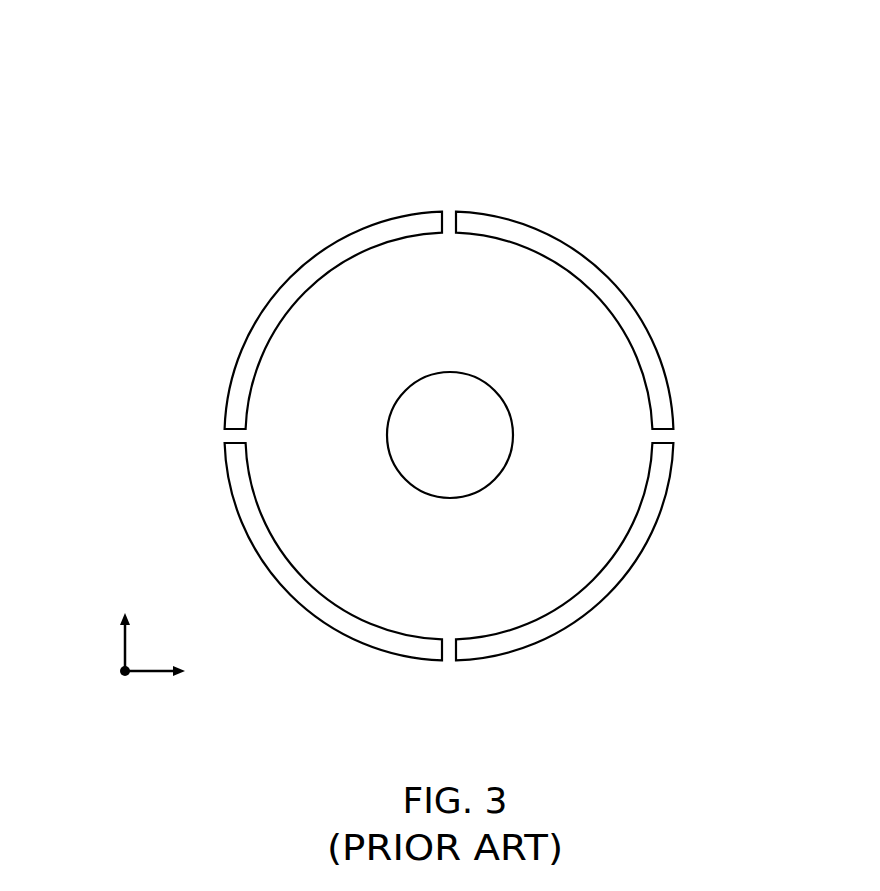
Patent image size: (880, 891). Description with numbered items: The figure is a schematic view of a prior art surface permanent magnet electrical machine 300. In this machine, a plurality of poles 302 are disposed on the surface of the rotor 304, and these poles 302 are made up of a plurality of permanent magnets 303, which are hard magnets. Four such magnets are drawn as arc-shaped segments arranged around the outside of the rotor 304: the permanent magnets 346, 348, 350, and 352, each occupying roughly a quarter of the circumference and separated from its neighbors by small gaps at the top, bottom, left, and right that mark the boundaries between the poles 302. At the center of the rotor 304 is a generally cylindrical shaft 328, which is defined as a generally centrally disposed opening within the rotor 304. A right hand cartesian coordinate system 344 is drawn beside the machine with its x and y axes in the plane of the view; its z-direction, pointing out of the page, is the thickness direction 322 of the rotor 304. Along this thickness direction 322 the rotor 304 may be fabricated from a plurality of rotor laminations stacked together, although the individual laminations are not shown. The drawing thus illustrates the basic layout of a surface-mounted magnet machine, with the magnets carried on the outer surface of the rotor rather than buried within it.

The surface permanent magnet electrical machine 300 is at (691, 85).
The plurality of poles 302 is at (686, 448).
The plurality of permanent magnets 303 is at (467, 211).
The rotor 304 is at (640, 286).
The thickness direction 322 is at (122, 705).
The shaft 328 is at (472, 446).
The right hand cartesian coordinate system 344 is at (92, 689).
The permanent magnet 346 is at (593, 268).
The permanent magnet 348 is at (592, 597).
The permanent magnet 350 is at (305, 597).
The permanent magnet 352 is at (307, 272).